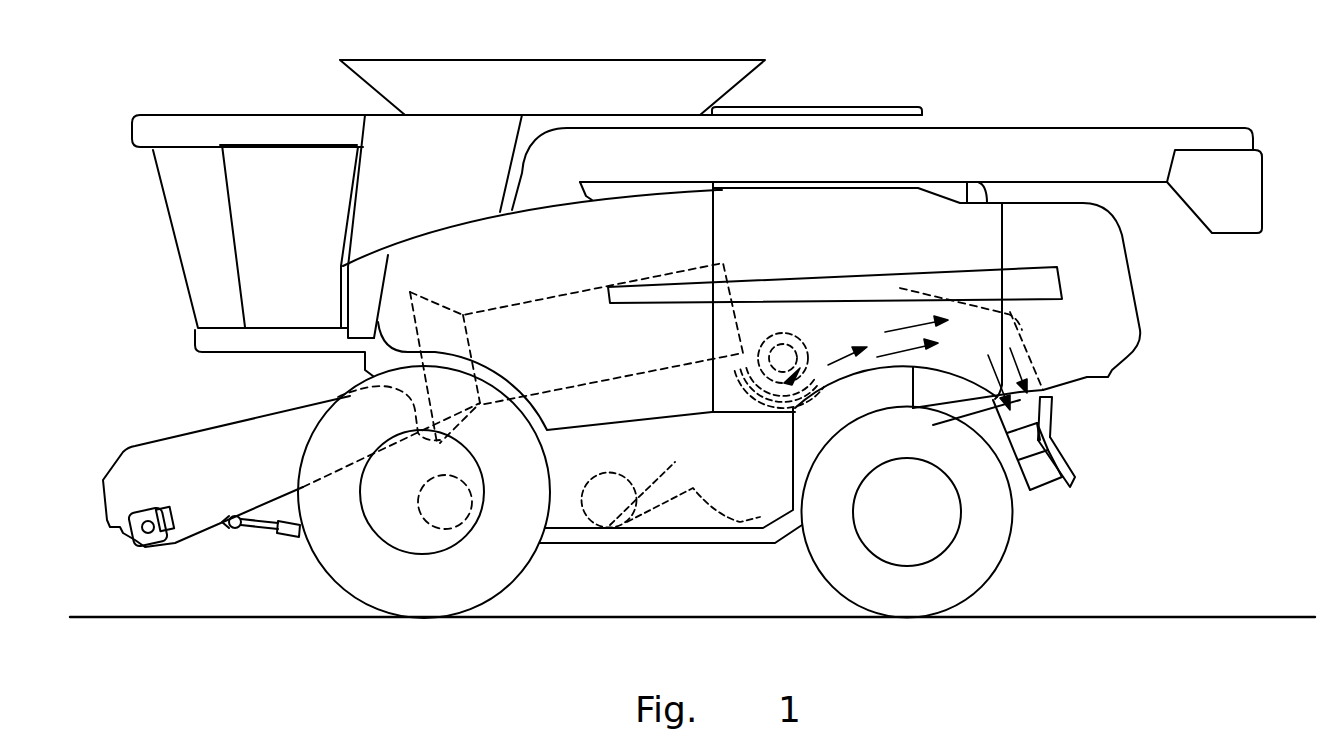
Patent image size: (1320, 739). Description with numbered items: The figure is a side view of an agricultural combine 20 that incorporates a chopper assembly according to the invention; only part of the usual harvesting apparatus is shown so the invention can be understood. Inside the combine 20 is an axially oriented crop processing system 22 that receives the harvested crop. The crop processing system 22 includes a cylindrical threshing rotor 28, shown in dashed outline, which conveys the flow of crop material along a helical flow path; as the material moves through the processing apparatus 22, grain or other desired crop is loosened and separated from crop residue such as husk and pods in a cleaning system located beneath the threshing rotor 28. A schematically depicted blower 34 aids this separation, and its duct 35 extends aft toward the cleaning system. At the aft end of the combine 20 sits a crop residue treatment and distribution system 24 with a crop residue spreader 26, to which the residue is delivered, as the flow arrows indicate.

The agricultural combine 20 is at (1000, 110).
The crop processing system 22 is at (518, 292).
The crop residue treatment and distribution system 24 is at (805, 315).
The crop residue spreader 26 is at (1052, 500).
The threshing rotor 28 is at (568, 392).
The blower 34 is at (590, 517).
The duct 35 is at (662, 493).